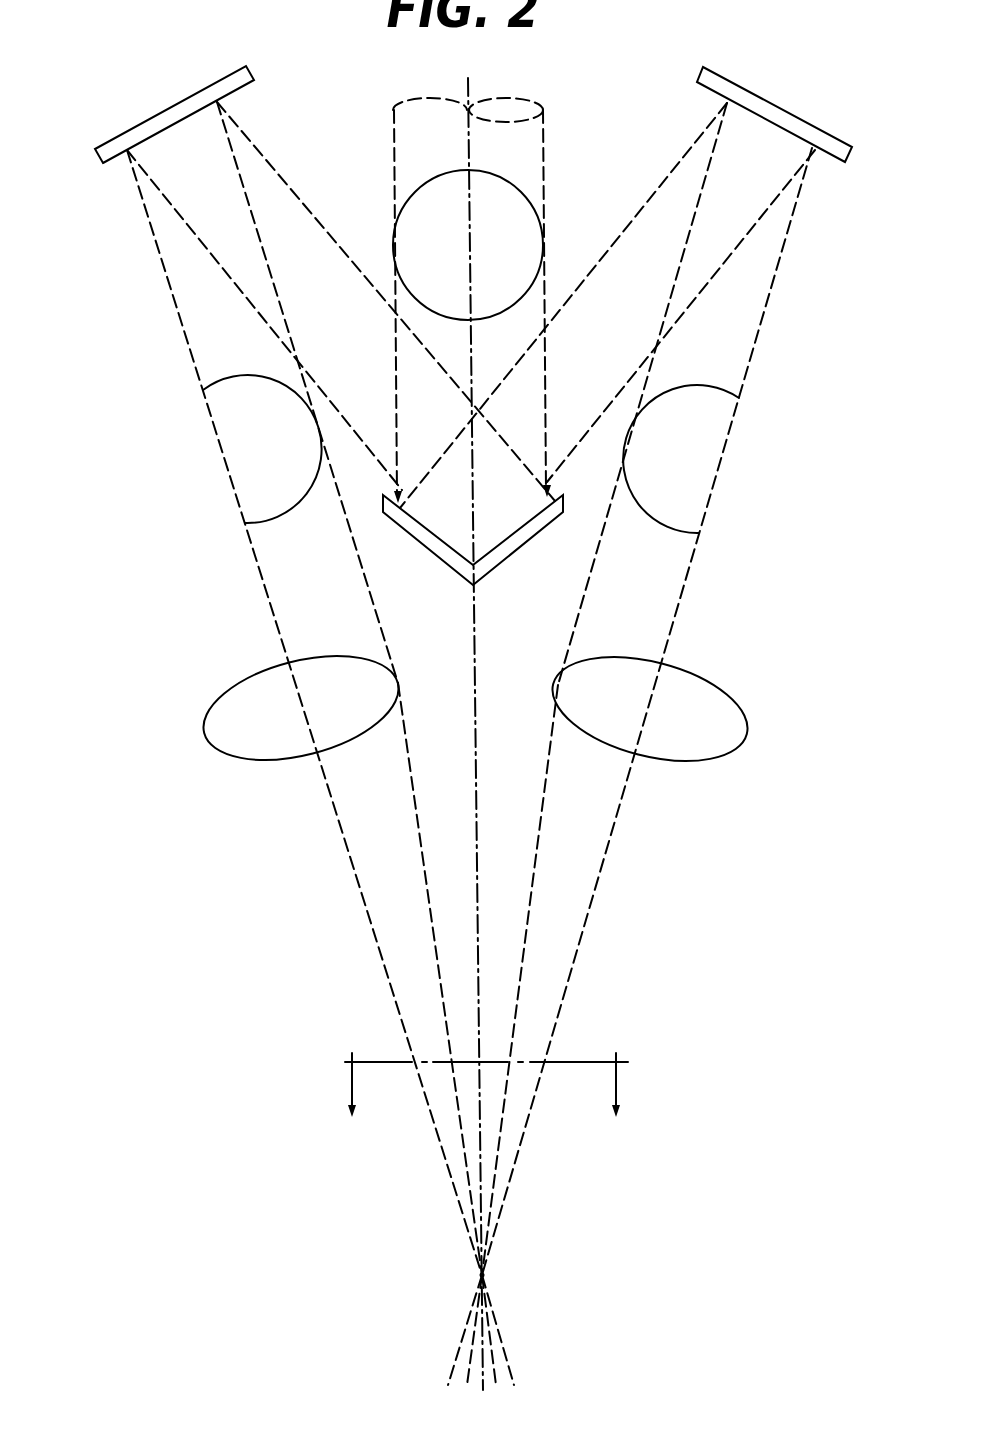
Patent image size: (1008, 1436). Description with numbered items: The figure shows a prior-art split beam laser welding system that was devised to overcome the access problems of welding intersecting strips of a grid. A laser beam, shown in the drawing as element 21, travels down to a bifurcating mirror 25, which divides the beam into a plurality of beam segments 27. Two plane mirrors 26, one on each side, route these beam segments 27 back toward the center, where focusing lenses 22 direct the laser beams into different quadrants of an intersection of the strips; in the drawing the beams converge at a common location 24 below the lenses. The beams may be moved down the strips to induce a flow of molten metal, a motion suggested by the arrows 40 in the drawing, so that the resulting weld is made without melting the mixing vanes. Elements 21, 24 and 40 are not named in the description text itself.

The light source (laser beam) 21 is at (547, 174).
The focusing lenses 22 is at (205, 737).
The focal point 24 is at (487, 1274).
The bifurcating mirror 25 is at (528, 541).
The plane mirrors 26 is at (140, 122).
The beam segments 27 is at (393, 243).
The direction of movement 40 is at (486, 1104).